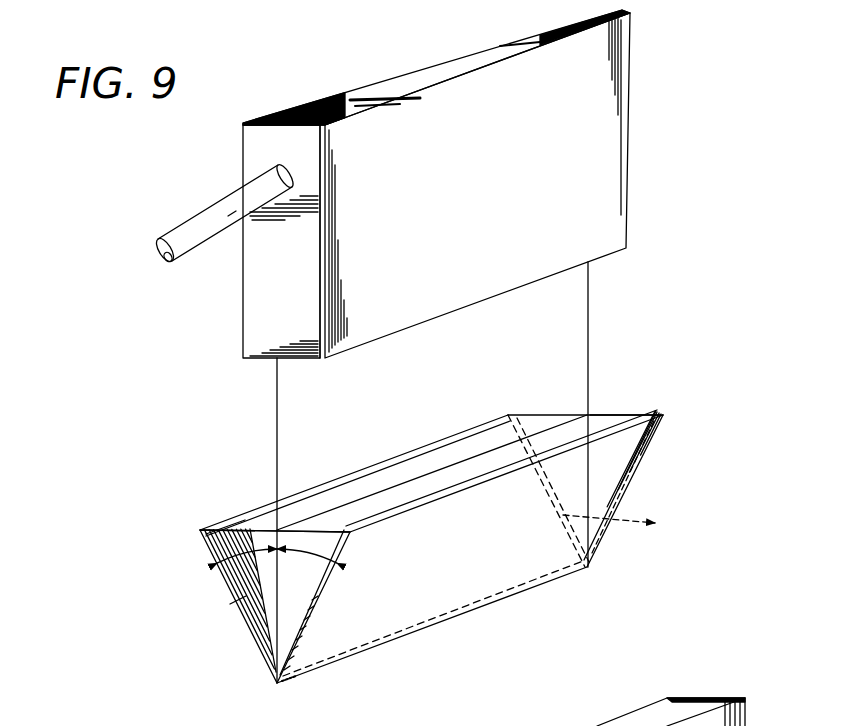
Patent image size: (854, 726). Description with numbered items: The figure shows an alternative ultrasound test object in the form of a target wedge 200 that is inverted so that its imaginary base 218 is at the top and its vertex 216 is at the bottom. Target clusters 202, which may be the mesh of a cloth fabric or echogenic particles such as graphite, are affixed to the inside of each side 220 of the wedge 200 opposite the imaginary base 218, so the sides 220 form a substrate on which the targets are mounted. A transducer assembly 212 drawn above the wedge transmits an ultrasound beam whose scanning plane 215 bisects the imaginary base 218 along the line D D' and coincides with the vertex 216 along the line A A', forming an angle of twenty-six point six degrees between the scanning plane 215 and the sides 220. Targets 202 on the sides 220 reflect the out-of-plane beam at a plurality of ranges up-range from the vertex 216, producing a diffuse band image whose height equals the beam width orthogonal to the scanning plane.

The target wedge 200 is at (213, 641).
The target clusters 202 is at (442, 460).
The transducer assembly 212 is at (597, 148).
The scanning plane of the ultrasound beam 215 is at (560, 341).
The vertex 216 is at (437, 628).
The imaginary base 218 is at (612, 410).
The sides 220 is at (600, 542).